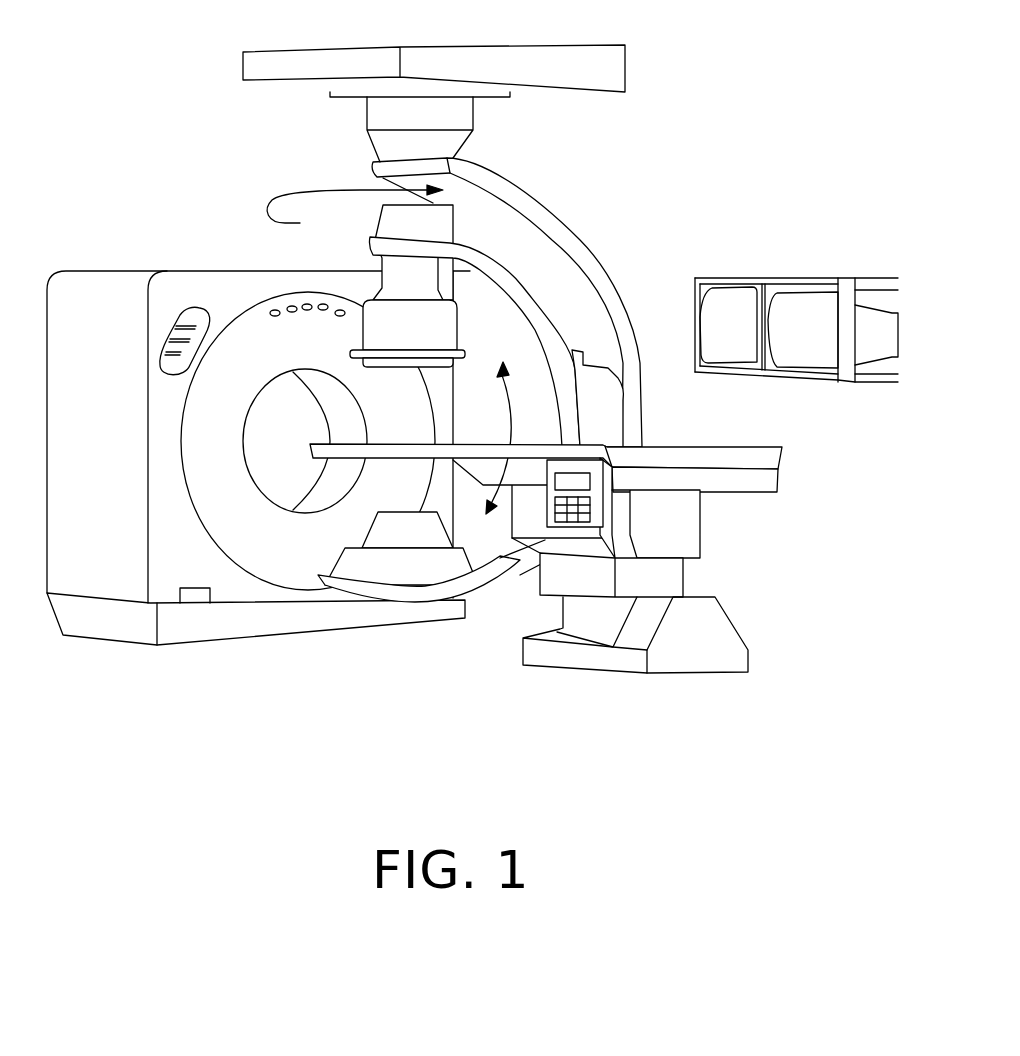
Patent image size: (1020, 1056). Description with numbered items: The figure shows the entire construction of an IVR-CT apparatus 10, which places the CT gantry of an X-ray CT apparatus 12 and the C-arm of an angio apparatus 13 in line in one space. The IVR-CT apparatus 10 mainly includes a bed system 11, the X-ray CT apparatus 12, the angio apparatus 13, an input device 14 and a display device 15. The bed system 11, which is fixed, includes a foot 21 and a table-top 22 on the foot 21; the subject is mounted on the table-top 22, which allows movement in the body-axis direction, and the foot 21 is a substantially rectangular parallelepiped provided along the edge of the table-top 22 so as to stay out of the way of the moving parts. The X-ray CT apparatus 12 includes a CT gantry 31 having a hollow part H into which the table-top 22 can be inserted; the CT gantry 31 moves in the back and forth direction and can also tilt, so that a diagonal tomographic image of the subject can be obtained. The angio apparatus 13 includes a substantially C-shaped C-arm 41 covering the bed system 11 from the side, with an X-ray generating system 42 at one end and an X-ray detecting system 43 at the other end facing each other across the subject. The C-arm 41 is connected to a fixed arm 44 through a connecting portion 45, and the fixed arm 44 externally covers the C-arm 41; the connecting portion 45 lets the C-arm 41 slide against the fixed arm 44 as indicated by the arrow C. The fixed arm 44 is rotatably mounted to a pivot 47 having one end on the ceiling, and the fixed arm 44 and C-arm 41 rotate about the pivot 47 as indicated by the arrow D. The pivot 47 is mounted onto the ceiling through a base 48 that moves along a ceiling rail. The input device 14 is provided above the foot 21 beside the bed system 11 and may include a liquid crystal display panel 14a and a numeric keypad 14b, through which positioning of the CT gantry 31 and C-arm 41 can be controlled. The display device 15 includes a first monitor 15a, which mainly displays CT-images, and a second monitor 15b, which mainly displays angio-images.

The IVR-CT apparatus 10 is at (127, 130).
The X-ray CT apparatus 12 is at (74, 258).
The CT gantry 31 is at (190, 271).
The hollow part H is at (290, 459).
The angio apparatus 13 is at (553, 185).
The X-ray detecting system 43 is at (399, 368).
The arrow D is at (329, 193).
The X-ray generating system 42 is at (399, 516).
The arrow C is at (490, 438).
The C-arm 41 is at (558, 330).
The fixed arm 44 is at (567, 227).
The connecting portion 45 is at (600, 365).
The pivot 47 is at (376, 148).
The base 48 is at (283, 92).
The bed system 11 is at (698, 440).
The table-top 22 is at (748, 496).
The input device 14 is at (793, 522).
The liquid crystal display panel 14a is at (590, 483).
The numeric keypad 14b is at (592, 508).
The foot 21 is at (537, 588).
The display device 15 is at (826, 212).
The first monitor 15a is at (743, 278).
The second monitor 15b is at (803, 278).